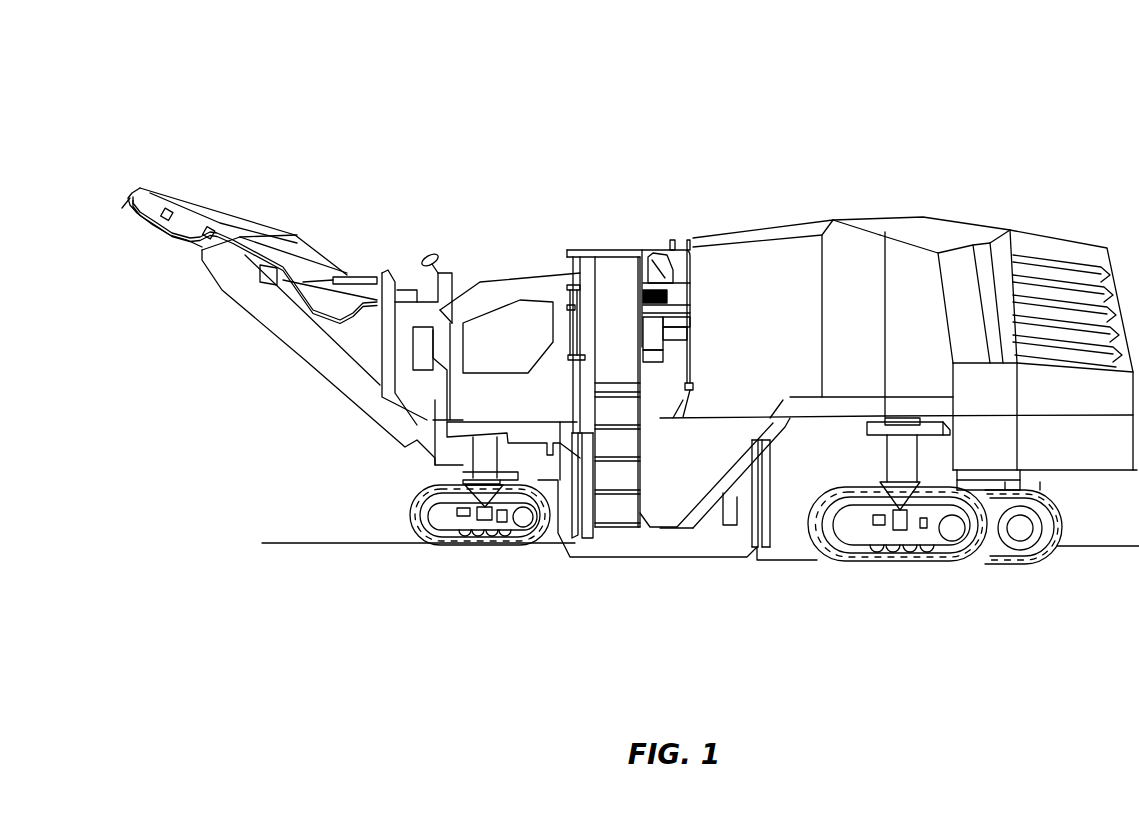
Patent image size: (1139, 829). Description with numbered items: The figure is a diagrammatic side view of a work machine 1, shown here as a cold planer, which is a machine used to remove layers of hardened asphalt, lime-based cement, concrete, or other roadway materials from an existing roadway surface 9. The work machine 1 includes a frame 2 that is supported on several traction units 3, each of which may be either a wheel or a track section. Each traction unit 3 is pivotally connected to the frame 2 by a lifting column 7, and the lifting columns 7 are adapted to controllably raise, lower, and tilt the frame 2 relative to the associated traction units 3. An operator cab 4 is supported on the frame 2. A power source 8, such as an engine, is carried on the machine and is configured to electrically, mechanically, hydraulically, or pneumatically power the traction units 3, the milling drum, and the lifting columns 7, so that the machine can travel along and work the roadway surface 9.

The work machine 1 is at (632, 112).
The frame 2 is at (785, 285).
The traction units 3 is at (950, 530).
The operator cab 4 is at (521, 322).
The lifting column 7 is at (900, 460).
The power source 8 is at (917, 300).
The roadway surface 9 is at (361, 543).